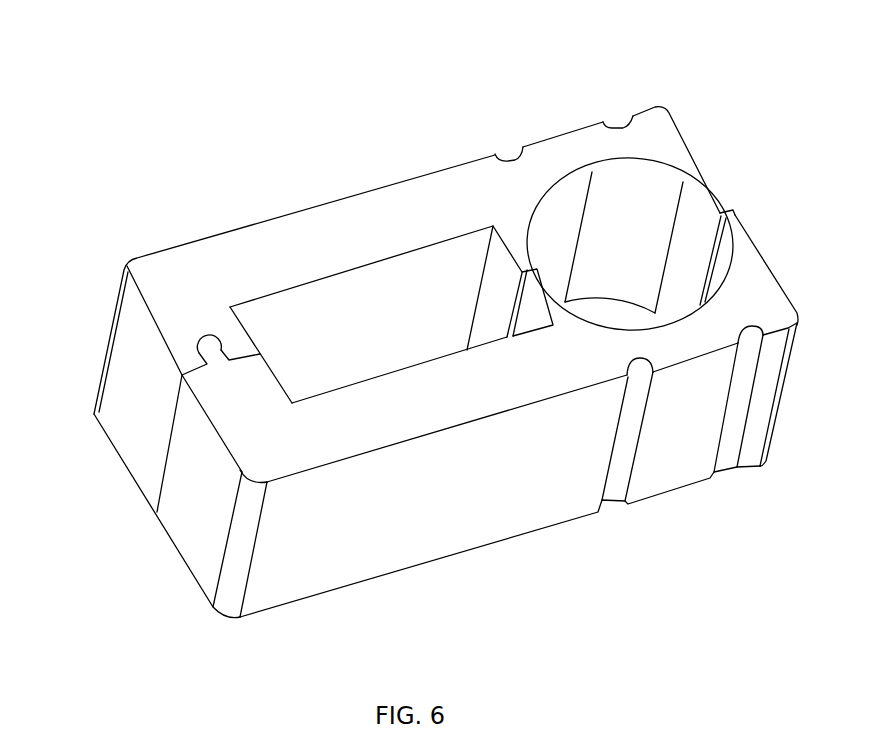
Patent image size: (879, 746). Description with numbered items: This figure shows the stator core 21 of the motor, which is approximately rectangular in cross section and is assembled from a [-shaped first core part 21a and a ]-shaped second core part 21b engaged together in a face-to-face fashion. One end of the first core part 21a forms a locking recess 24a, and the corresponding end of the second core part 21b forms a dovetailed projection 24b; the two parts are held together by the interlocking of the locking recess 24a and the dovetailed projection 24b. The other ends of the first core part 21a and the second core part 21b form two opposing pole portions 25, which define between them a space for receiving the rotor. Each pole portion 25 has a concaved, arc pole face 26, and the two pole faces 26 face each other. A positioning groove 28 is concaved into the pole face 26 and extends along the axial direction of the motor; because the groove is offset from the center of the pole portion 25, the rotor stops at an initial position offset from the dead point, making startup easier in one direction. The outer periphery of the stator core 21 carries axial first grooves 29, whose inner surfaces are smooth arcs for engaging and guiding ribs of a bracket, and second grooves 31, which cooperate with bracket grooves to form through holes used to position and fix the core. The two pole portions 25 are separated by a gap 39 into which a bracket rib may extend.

The stator core 21 is at (220, 163).
The first core part 21a is at (360, 247).
The second core part 21b is at (360, 432).
The locking recess 24a is at (195, 362).
The dovetailed projection 24b is at (212, 348).
The pole portion 25 is at (590, 150).
The pole face 26 is at (560, 213).
The positioning groove 28 is at (620, 222).
The first groove 29 is at (615, 128).
The second groove 31 is at (510, 158).
The gap 39 is at (737, 213).